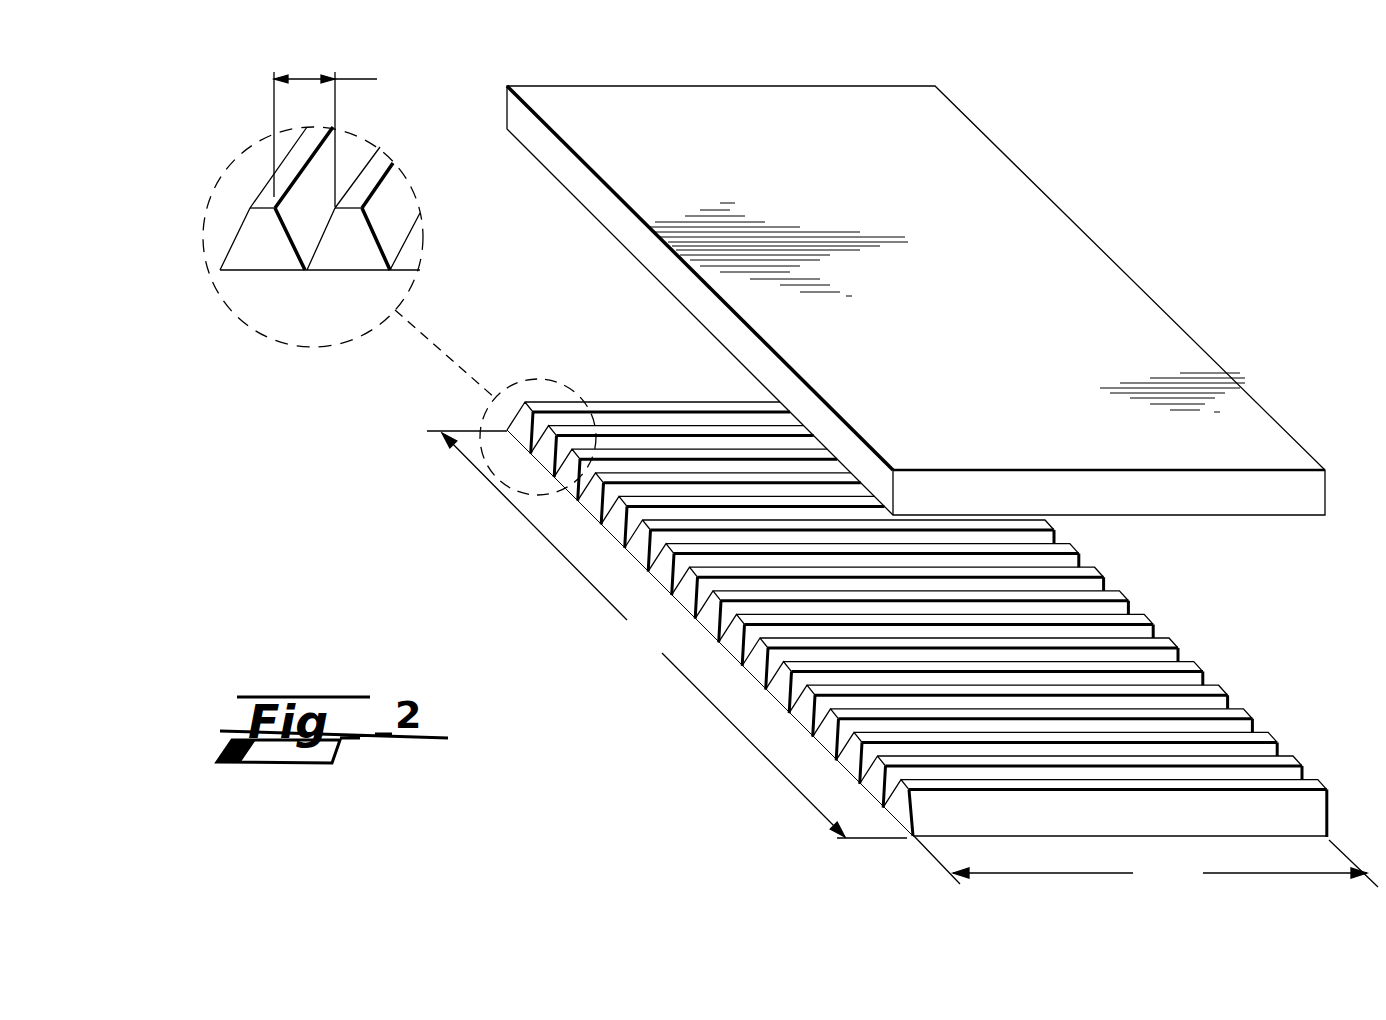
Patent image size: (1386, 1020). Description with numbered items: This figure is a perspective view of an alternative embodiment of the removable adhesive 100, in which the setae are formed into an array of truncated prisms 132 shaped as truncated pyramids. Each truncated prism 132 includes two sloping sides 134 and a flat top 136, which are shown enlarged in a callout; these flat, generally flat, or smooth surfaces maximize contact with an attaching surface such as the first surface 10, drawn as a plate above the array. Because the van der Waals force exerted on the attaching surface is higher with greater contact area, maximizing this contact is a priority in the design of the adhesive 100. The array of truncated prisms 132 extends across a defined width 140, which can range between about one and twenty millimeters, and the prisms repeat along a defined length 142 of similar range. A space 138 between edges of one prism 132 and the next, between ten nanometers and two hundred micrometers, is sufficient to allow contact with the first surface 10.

The first surface 10 is at (1072, 248).
The adhesive 100 is at (662, 366).
The truncated prisms 132 is at (902, 813).
The side 134 is at (235, 242).
The top 136 is at (260, 207).
The space 138 is at (352, 136).
The width 140 is at (1146, 862).
The length 142 is at (667, 634).